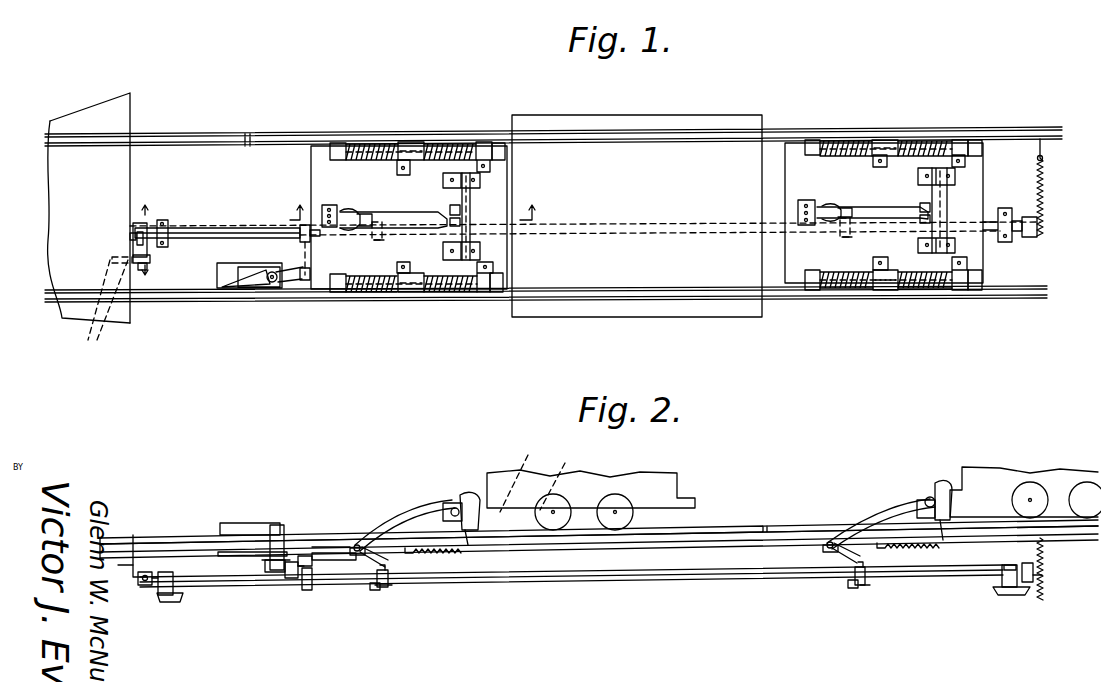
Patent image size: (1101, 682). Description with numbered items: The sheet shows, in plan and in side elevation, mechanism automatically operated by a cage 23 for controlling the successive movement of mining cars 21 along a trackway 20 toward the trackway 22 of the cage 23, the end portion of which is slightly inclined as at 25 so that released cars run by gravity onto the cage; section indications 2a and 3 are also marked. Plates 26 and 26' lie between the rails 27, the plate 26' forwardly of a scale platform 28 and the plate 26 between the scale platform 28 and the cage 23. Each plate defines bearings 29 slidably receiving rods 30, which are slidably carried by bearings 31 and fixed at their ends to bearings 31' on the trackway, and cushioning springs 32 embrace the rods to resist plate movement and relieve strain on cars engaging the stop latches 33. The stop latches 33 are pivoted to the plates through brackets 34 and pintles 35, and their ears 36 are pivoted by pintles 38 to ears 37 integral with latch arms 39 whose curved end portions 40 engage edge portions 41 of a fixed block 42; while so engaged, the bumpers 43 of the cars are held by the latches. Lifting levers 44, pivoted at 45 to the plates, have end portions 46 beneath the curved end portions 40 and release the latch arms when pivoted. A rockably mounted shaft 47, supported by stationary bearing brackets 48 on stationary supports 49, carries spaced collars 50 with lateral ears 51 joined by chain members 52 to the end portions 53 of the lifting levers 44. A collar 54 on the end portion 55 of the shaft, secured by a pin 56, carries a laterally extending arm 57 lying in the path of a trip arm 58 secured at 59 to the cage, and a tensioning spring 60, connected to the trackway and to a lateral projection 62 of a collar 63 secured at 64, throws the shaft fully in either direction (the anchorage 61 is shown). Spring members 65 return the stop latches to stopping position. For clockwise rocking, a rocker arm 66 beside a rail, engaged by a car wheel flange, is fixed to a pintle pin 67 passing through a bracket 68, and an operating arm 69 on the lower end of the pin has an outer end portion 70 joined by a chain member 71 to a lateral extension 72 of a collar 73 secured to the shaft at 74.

In FIG. 1, the trackway 20 is at (1012, 128).
In FIG. 2, the trackway 20 is at (208, 560).
In FIG. 2, the mining cars 21 is at (700, 478).
In FIG. 1, the trackway of the cage 22 is at (105, 134).
In FIG. 2, the trackway of the cage 22 is at (125, 538).
In FIG. 1, the cage 23 is at (75, 266).
In FIG. 2, the inclined portion 25 is at (320, 545).
In FIG. 1, the plate 26 is at (432, 217).
In FIG. 1, the plate 26' is at (884, 178).
In FIG. 1, the rails 27 is at (285, 138).
In FIG. 1, the scale platform 28 is at (730, 120).
In FIG. 2, the scale platform 28 is at (685, 541).
In FIG. 1, the bearings 29 is at (483, 141).
In FIG. 1, the rods 30 is at (385, 146).
In FIG. 1, the bearings 31 is at (672, 201).
In FIG. 1, the bearings 31' is at (669, 220).
In FIG. 1, the cushioning springs 32 is at (372, 145).
In FIG. 1, the stop latches 33 is at (472, 200).
In FIG. 2, the stop latches 33 is at (466, 498).
In FIG. 1, the brackets 34 is at (482, 250).
In FIG. 2, the brackets 34 is at (562, 479).
In FIG. 1, the pintles 35 is at (500, 258).
In FIG. 2, the pintles 35 is at (522, 475).
In FIG. 1, the ears 36 is at (452, 212).
In FIG. 1, the ears 37 is at (472, 200).
In FIG. 2, the ears 37 is at (448, 512).
In FIG. 1, the pintles 38 is at (530, 226).
In FIG. 2, the pintles 38 is at (453, 508).
In FIG. 1, the latch arms 39 is at (412, 220).
In FIG. 2, the latch arms 39 is at (400, 528).
In FIG. 2, the curved end portions 40 is at (358, 545).
In FIG. 1, the edge portions 41 is at (348, 210).
In FIG. 2, the edge portions 41 is at (345, 562).
In FIG. 1, the fixed block 42 is at (334, 205).
In FIG. 2, the fixed block 42 is at (320, 580).
In FIG. 2, the bumpers 43 is at (478, 497).
In FIG. 2, the lifting levers 44 is at (380, 590).
In FIG. 2, the pintles 45 is at (382, 572).
In FIG. 2, the end portions 46 is at (357, 545).
In FIG. 1, the shaft 47 is at (240, 228).
In FIG. 2, the shaft 47 is at (528, 582).
In FIG. 1, the bearing brackets 48 is at (170, 228).
In FIG. 2, the bearing brackets 48 is at (165, 596).
In FIG. 2, the stationary supports 49 is at (170, 603).
In FIG. 2, the collars 50 is at (388, 588).
In FIG. 2, the lateral ears 51 is at (150, 585).
In FIG. 2, the chain members 52 is at (392, 566).
In FIG. 2, the end portions 53 is at (412, 560).
In FIG. 1, the collar 54 is at (146, 232).
In FIG. 2, the collar 54 is at (150, 570).
In FIG. 1, the end portion 55 is at (152, 226).
In FIG. 1, the pin 56 is at (132, 236).
In FIG. 1, the laterally extending arm 57 is at (152, 258).
In FIG. 1, the trip arm 58 is at (150, 267).
In FIG. 2, the trip arm 58 is at (142, 565).
In FIG. 1, the securing elements 59 is at (110, 304).
In FIG. 2, the securing elements 59 is at (128, 562).
In FIG. 1, the tensioning spring 60 is at (1045, 194).
In FIG. 2, the tensioning spring 60 is at (1043, 570).
In FIG. 1, the spring anchor 61 is at (1045, 158).
In FIG. 2, the spring anchor 61 is at (1043, 578).
In FIG. 1, the lateral projection 62 is at (1038, 237).
In FIG. 1, the collar 63 is at (1028, 239).
In FIG. 2, the collar 63 is at (1030, 584).
In FIG. 1, the securing point 64 is at (1014, 225).
In FIG. 2, the spring members 65 is at (455, 558).
In FIG. 1, the rocker arm 66 is at (232, 290).
In FIG. 2, the rocker arm 66 is at (240, 523).
In FIG. 1, the pintle pin 67 is at (270, 283).
In FIG. 2, the pintle pin 67 is at (284, 525).
In FIG. 1, the bracket 68 is at (248, 266).
In FIG. 2, the bracket 68 is at (245, 557).
In FIG. 1, the operating arm 69 is at (292, 288).
In FIG. 2, the operating arm 69 is at (278, 562).
In FIG. 1, the outer end portion 70 is at (305, 282).
In FIG. 2, the outer end portion 70 is at (305, 556).
In FIG. 1, the chain member 71 is at (300, 268).
In FIG. 2, the chain member 71 is at (292, 580).
In FIG. 1, the lateral extension 72 is at (300, 230).
In FIG. 2, the lateral extension 72 is at (300, 572).
In FIG. 1, the collar 73 is at (302, 226).
In FIG. 2, the collar 73 is at (283, 575).
In FIG. 1, the securing point 74 is at (312, 234).
In FIG. 1, the section line 2a is at (148, 236).
In FIG. 1, the section line 3 is at (412, 200).